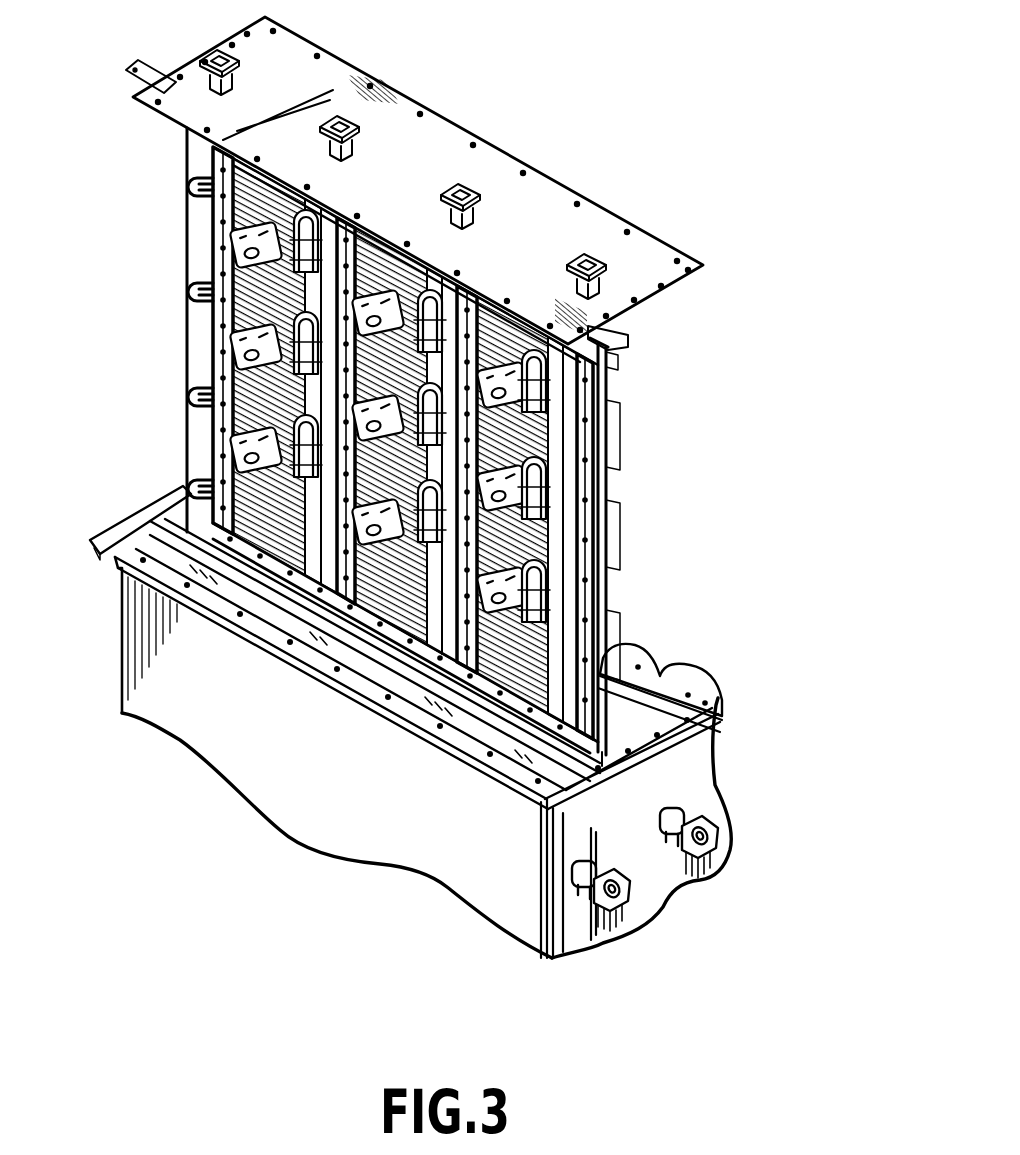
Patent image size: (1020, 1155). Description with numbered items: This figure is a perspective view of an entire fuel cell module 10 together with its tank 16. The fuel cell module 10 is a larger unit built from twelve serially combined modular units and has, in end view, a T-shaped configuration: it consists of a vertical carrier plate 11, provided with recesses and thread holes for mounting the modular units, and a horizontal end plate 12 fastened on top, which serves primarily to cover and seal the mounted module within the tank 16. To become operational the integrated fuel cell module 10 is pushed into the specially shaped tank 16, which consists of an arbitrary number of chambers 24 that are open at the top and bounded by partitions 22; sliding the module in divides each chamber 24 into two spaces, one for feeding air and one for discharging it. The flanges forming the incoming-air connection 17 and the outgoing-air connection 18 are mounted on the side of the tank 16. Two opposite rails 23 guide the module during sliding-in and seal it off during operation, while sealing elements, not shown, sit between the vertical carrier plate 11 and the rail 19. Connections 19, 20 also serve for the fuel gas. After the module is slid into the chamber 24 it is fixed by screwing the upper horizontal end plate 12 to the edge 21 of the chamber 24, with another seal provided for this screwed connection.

The fuel cell module 10 is at (745, 309).
The vertical carrier plate 11 is at (589, 412).
The horizontal end plate 12 is at (177, 108).
The tank 16 is at (203, 899).
The incoming-air connection 17 is at (618, 912).
The outgoing-air connection 18 is at (702, 852).
The rail 19 is at (340, 108).
The fuel gas connection 20 is at (467, 192).
The edge of the chamber 21 is at (674, 673).
The partition 22 is at (160, 716).
The rail 23 is at (167, 547).
The chamber 24 is at (487, 712).